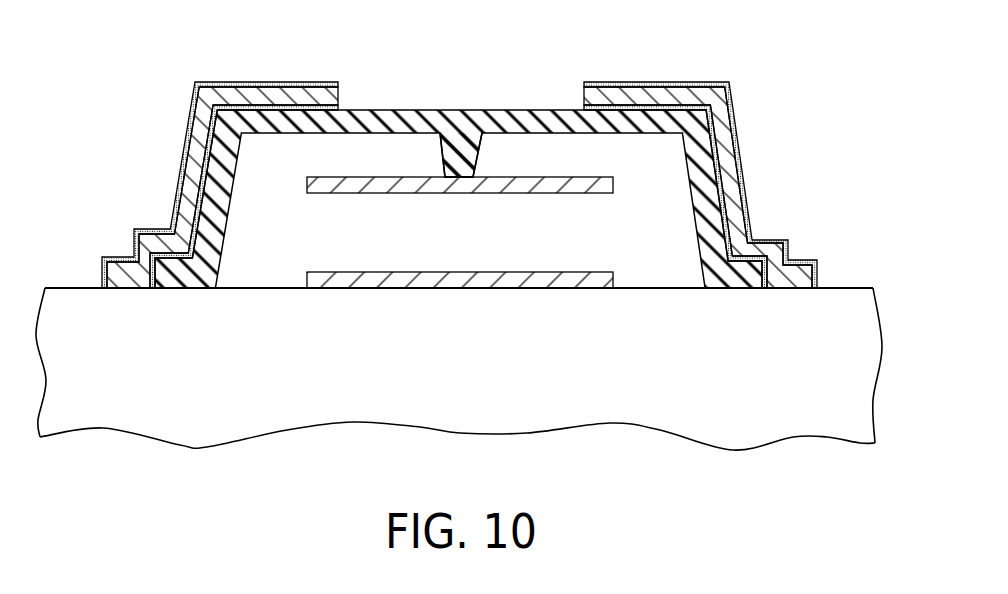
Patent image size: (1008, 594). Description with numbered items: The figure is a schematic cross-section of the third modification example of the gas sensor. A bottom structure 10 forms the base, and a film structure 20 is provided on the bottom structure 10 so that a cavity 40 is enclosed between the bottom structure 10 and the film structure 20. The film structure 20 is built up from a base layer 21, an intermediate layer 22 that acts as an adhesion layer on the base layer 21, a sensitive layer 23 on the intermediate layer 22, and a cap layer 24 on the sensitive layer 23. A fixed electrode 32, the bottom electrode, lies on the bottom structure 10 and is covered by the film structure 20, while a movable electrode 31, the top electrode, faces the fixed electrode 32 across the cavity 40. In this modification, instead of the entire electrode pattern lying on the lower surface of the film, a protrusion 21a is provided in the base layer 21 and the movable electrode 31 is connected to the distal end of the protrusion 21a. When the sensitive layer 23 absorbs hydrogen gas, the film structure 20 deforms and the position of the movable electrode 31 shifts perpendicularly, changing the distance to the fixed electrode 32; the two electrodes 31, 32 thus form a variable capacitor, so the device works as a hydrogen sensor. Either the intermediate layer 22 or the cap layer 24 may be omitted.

The bottom structure 10 is at (208, 425).
The film structure 20 is at (459, 154).
The base layer 21 is at (477, 199).
The protrusion 21a is at (441, 160).
The intermediate layer 22 is at (737, 167).
The sensitive layer 23 is at (735, 138).
The cap layer 24 is at (733, 110).
The movable electrode 31 is at (530, 185).
The fixed electrode 32 is at (391, 282).
The cavity 40 is at (267, 172).